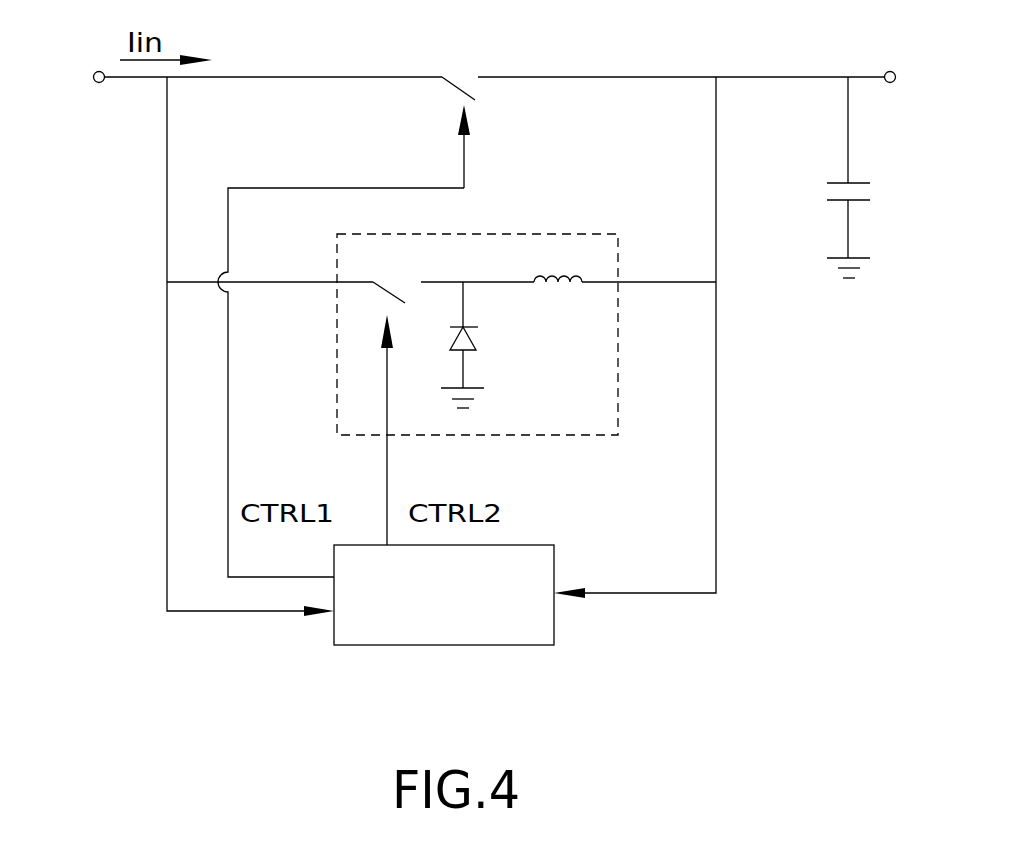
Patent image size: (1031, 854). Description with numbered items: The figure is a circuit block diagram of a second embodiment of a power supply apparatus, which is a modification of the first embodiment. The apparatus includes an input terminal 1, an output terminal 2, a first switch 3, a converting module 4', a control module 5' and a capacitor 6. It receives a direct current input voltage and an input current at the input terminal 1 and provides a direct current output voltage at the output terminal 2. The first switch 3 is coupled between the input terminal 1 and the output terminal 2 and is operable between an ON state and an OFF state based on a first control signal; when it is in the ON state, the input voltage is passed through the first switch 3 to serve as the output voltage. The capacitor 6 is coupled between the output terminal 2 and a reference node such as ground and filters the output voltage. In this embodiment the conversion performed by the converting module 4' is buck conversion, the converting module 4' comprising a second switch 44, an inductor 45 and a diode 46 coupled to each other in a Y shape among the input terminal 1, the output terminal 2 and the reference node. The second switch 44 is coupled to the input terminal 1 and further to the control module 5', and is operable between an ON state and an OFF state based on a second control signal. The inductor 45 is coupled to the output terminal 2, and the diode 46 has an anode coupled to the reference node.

The input terminal 1 is at (95, 85).
The output terminal 2 is at (890, 84).
The first switch 3 is at (460, 82).
The converting module 4' is at (477, 285).
The second switch 44 is at (398, 288).
The inductor 45 is at (553, 284).
The diode 46 is at (470, 338).
The control module 5' is at (444, 644).
The capacitor 6 is at (860, 202).